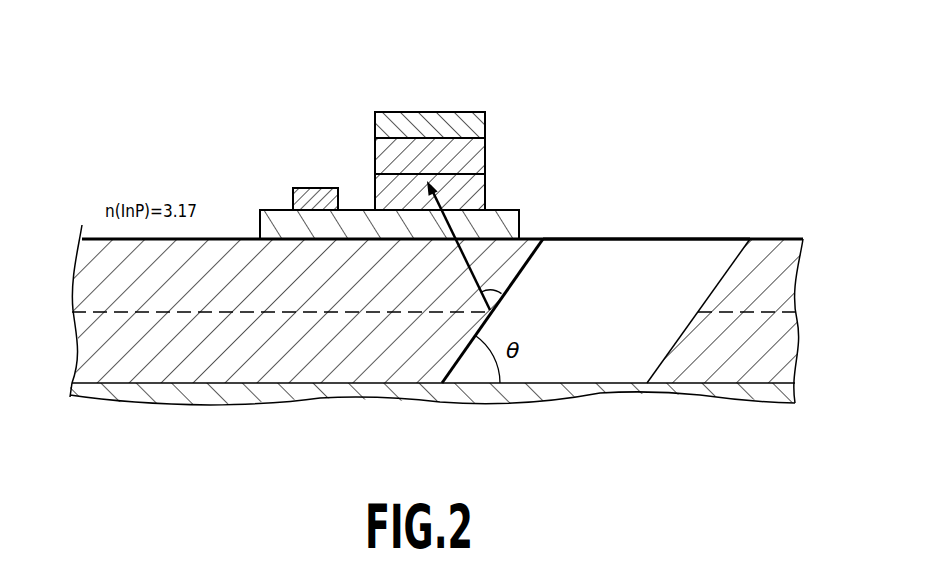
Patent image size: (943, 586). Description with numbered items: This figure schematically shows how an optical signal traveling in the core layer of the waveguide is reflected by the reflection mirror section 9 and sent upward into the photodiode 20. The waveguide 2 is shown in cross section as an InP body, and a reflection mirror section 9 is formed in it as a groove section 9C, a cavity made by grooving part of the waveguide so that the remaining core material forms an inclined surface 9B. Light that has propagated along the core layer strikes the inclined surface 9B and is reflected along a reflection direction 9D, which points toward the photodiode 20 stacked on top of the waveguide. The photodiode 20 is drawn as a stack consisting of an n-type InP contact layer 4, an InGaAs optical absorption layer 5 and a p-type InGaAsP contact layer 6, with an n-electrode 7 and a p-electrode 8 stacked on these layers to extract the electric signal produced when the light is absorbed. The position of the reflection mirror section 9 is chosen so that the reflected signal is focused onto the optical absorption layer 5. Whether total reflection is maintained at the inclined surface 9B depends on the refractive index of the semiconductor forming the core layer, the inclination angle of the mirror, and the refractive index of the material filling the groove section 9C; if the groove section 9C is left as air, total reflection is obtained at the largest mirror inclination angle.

The single-mode optical waveguide 2 is at (40, 240).
The n-type InP contact layer 4 is at (505, 225).
The InGaAs optical absorption layer 5 is at (472, 196).
The p-type InGaAsP contact layer 6 is at (472, 162).
The n-electrode 7 is at (326, 188).
The p-electrode 8 is at (472, 128).
The reflection mirror section 9 is at (595, 323).
The inclined surface 9B is at (528, 262).
The groove section 9C is at (641, 250).
The reflection direction 9D is at (532, 306).
The photodiode 20 is at (416, 122).